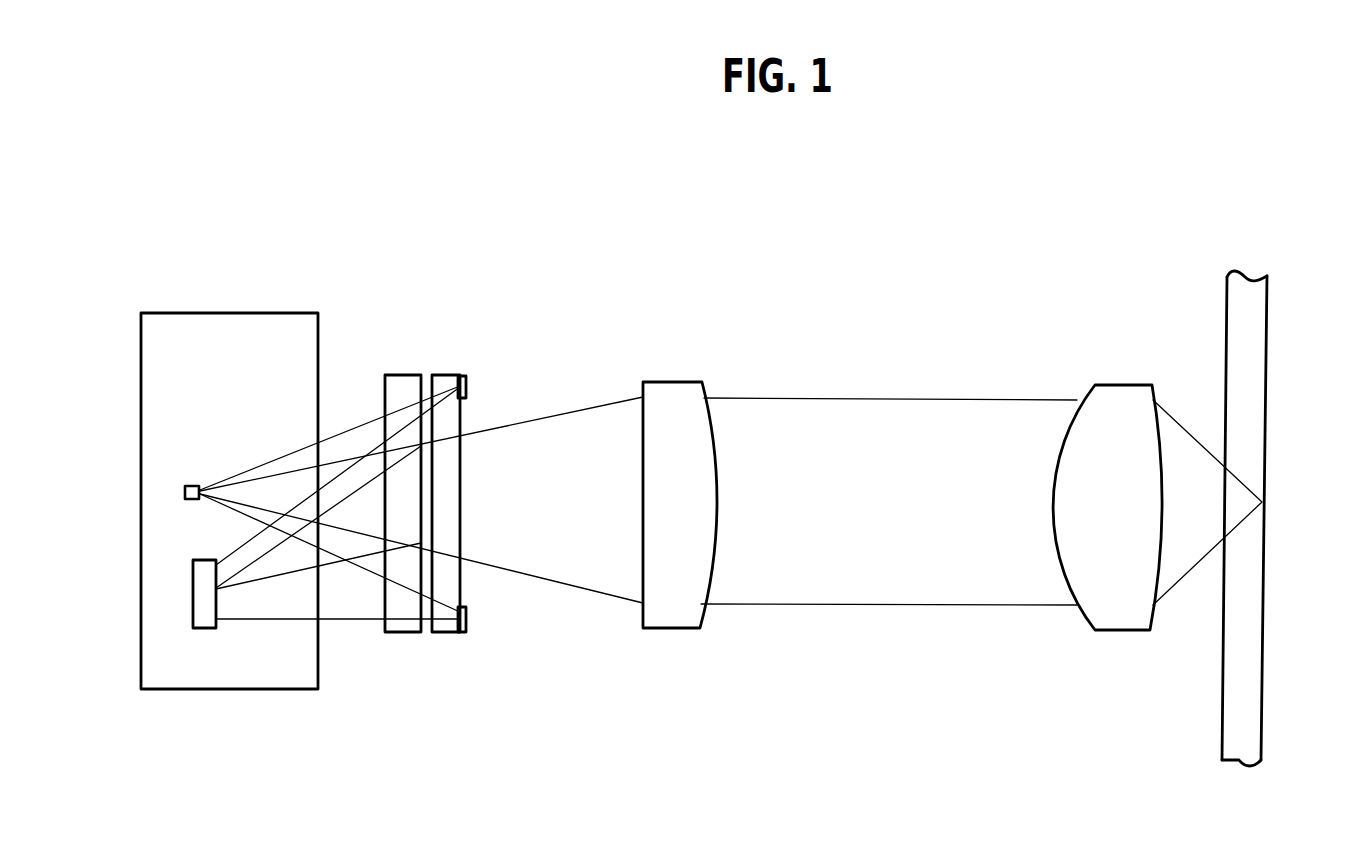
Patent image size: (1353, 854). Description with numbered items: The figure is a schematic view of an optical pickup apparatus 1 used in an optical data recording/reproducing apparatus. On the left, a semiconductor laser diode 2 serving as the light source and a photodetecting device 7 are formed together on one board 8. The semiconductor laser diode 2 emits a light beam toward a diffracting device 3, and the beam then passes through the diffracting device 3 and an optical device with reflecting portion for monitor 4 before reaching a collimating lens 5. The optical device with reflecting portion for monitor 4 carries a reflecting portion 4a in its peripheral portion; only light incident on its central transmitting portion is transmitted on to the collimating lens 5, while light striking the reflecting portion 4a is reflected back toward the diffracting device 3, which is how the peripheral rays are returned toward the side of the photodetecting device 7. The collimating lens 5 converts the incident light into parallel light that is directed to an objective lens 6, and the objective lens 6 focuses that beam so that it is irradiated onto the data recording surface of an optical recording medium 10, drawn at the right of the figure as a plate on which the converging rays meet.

The optical pickup apparatus 1 is at (1297, 166).
The semiconductor laser diode 2 is at (184, 492).
The diffracting device 3 is at (403, 375).
The optical device with reflecting portion for monitor 4 is at (452, 375).
The reflecting portion 4a is at (467, 385).
The collimating lens 5 is at (678, 381).
The objective lens 6 is at (1128, 385).
The photodetecting device 7 is at (193, 592).
The board 8 is at (213, 689).
The optical recording medium 10 is at (1267, 400).